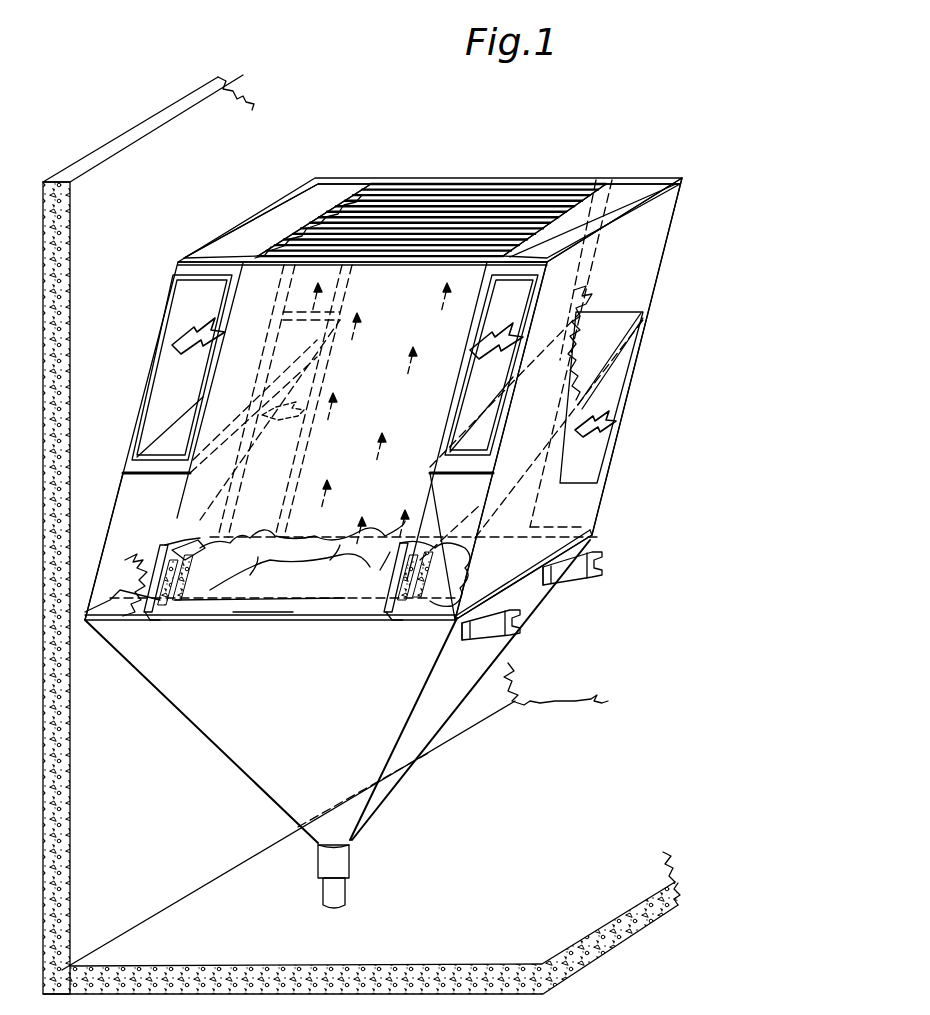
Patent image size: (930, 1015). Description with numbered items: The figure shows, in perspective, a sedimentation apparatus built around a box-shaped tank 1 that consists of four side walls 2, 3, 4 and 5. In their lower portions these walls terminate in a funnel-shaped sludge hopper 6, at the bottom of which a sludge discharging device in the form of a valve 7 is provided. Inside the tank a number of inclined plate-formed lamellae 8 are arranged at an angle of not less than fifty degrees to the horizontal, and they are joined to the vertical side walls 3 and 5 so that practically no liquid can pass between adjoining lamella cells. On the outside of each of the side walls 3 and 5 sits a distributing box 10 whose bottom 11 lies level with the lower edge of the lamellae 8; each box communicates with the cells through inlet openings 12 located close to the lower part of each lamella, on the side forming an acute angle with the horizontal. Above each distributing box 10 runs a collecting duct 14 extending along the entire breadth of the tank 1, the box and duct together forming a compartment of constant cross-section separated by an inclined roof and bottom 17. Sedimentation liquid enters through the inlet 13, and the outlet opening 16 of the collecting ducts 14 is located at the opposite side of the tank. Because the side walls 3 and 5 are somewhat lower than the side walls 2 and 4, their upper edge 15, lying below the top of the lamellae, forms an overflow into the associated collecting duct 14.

The box-shaped tank 1 is at (606, 176).
The side wall 2 is at (390, 320).
The side wall 3 is at (650, 207).
The side wall 4 is at (517, 178).
The side wall 5 is at (172, 550).
The funnel-shaped sludge hopper 6 is at (247, 758).
The valve 7 is at (338, 873).
The inclined plate-formed lamellae 8 is at (430, 232).
The distributing box 10 is at (133, 517).
The bottom of distributing box 11 is at (145, 595).
The inlet openings 12 is at (180, 600).
The inlet for sedimentation liquid 13 is at (610, 375).
The collecting duct 14 is at (337, 190).
The upper edge of side wall 15 is at (583, 217).
The outlet opening 16 is at (178, 332).
The inclined roof and bottom 17 is at (628, 338).